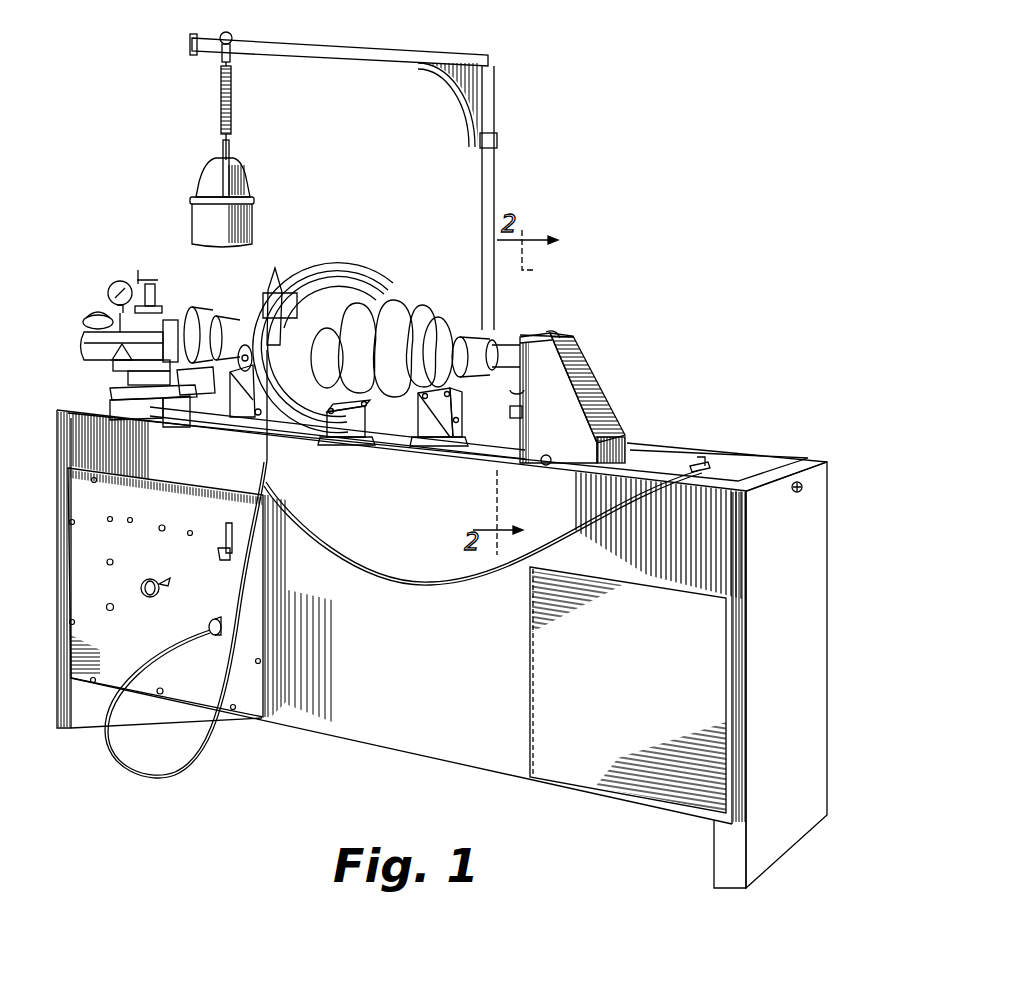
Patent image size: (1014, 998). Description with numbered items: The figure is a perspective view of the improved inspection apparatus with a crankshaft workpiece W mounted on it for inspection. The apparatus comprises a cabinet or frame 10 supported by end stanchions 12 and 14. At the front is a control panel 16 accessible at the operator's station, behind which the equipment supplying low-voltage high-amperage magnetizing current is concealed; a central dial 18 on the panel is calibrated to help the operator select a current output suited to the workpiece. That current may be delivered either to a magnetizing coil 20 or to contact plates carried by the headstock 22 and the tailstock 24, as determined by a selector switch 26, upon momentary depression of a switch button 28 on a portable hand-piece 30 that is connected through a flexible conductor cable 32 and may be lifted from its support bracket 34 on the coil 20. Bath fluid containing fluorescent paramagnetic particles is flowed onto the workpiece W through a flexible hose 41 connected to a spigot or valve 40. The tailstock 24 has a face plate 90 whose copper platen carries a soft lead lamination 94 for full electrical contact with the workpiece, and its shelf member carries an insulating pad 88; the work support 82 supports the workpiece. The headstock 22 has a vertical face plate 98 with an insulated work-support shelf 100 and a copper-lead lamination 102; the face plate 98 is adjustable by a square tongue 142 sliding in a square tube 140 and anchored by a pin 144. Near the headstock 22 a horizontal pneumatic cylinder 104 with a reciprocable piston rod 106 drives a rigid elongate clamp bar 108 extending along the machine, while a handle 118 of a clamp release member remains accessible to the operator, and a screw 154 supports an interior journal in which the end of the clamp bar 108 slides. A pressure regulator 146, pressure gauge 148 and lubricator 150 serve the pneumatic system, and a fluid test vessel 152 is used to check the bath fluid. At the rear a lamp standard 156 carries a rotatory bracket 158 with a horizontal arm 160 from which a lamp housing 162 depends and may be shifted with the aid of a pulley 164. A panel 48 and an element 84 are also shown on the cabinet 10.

The cabinet 10 is at (425, 748).
The end stanchion 12 is at (820, 632).
The end stanchion 14 is at (62, 700).
The control panel 16 is at (245, 708).
The central dial 18 is at (160, 587).
The magnetizing coil 20 is at (331, 258).
The headstock 22 is at (180, 386).
The tailstock 24 is at (606, 390).
The selector switch 26 is at (226, 556).
The switch button 28 is at (240, 322).
The hand-piece 30 is at (280, 320).
The conductor cable 32 is at (255, 597).
The support bracket 34 is at (276, 294).
The spigot or valve 40 is at (702, 466).
The flexible hose 41 is at (428, 583).
The access door 48 is at (578, 780).
The work support 82 is at (437, 440).
The bearing block 84 is at (243, 412).
The insulating pad 88 is at (522, 413).
The tailstock face plate 90 is at (560, 335).
The lamination 94 is at (524, 391).
The face plate 98 is at (190, 378).
The work-support shelf 100 is at (216, 400).
The copper-lead lamination 102 is at (113, 366).
The pneumatic cylinder 104 is at (168, 418).
The piston rod 106 is at (196, 426).
The clamp bar 108 is at (375, 440).
The handle 118 is at (547, 466).
The square tube 140 is at (156, 296).
The square tongue 142 is at (172, 320).
The pin 144 is at (90, 333).
The pressure regulator 146 is at (138, 270).
The pressure gauge 148 is at (118, 282).
The lubricator 150 is at (96, 312).
The fluid test vessel 152 is at (112, 352).
The screw 154 is at (805, 488).
The lamp standard 156 is at (495, 180).
The rotatory bracket 158 is at (484, 116).
The horizontal arm 160 is at (365, 46).
The lamp housing 162 is at (254, 222).
The pulley 164 is at (232, 36).
The workpiece W is at (425, 300).